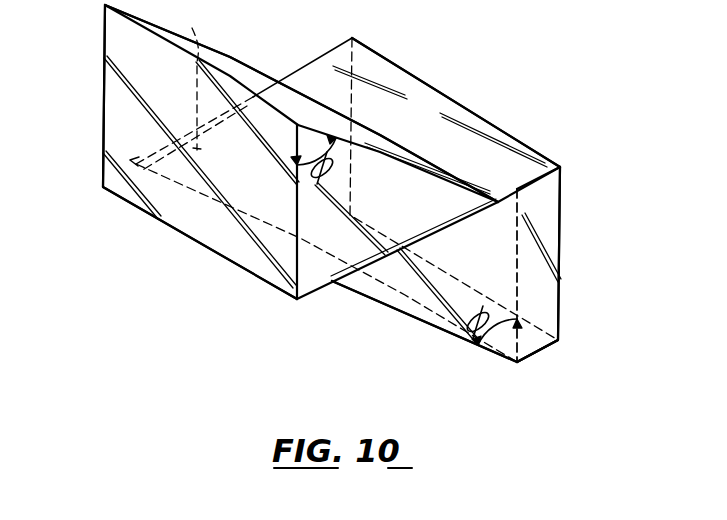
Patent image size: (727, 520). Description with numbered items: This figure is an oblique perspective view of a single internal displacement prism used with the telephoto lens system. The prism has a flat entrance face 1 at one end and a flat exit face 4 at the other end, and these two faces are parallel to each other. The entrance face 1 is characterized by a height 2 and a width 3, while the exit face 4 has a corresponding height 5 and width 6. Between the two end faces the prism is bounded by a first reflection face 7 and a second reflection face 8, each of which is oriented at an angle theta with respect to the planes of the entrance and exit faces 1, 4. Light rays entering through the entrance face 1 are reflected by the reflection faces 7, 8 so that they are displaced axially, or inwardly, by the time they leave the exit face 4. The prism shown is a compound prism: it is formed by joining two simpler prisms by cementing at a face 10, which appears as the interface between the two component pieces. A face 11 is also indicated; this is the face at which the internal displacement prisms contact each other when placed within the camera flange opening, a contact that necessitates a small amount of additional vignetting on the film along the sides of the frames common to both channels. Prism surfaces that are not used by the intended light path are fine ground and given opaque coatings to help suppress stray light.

The entrance face 1 is at (106, 43).
The height of entrance face 2 is at (103, 97).
The width of entrance face 3 is at (178, 234).
The exit face 4 is at (488, 136).
The height of exit face 5 is at (560, 320).
The width of exit face 6 is at (537, 151).
The first reflection face 7 is at (222, 60).
The second reflection face 8 is at (392, 307).
The cemented joining face 10 is at (186, 77).
The contact face 11 is at (523, 347).